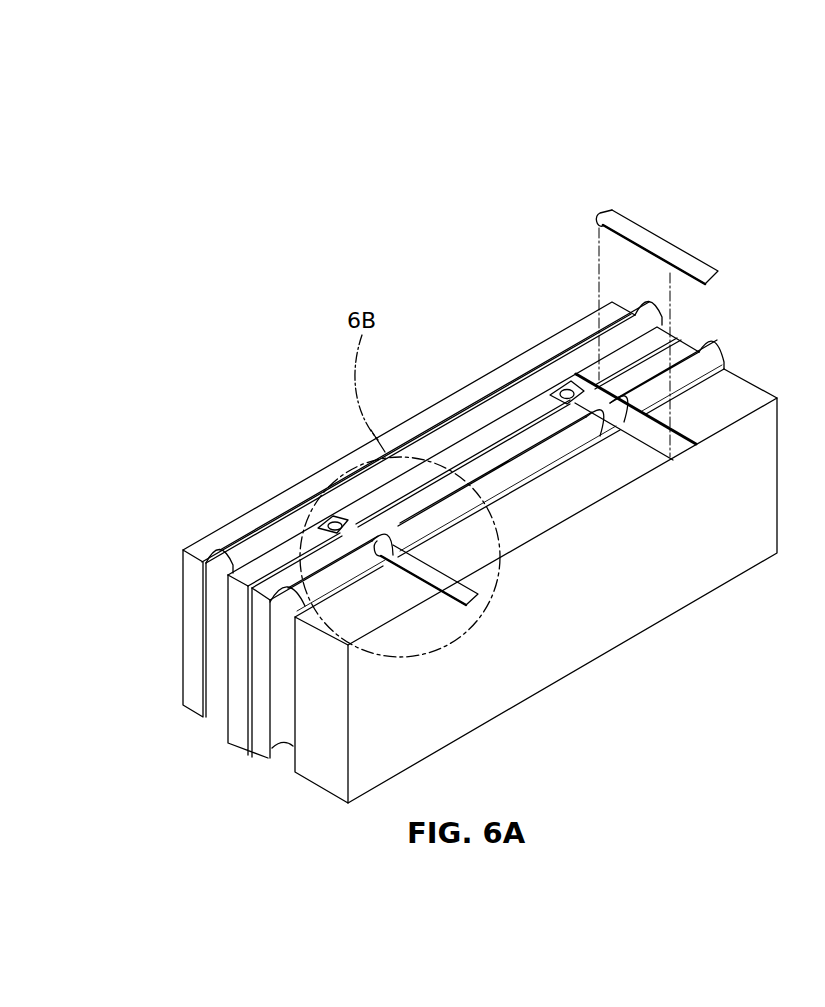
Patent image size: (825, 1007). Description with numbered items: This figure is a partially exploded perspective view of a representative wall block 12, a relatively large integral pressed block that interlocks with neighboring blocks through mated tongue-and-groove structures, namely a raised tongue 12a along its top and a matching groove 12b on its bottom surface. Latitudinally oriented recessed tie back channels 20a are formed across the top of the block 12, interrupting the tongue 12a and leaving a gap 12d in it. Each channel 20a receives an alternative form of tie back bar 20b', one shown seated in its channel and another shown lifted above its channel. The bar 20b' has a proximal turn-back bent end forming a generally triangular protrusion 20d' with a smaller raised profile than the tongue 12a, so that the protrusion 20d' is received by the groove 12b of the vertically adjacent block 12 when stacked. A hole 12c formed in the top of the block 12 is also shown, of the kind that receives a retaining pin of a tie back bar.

The block 12 is at (579, 620).
The tongue 12a is at (493, 407).
The groove 12b is at (275, 673).
The hole 12c is at (567, 390).
The gap 12d is at (625, 422).
The tie back channel 20a is at (645, 445).
The tie back bar 20b' is at (573, 462).
The protrusion 20d' is at (491, 357).